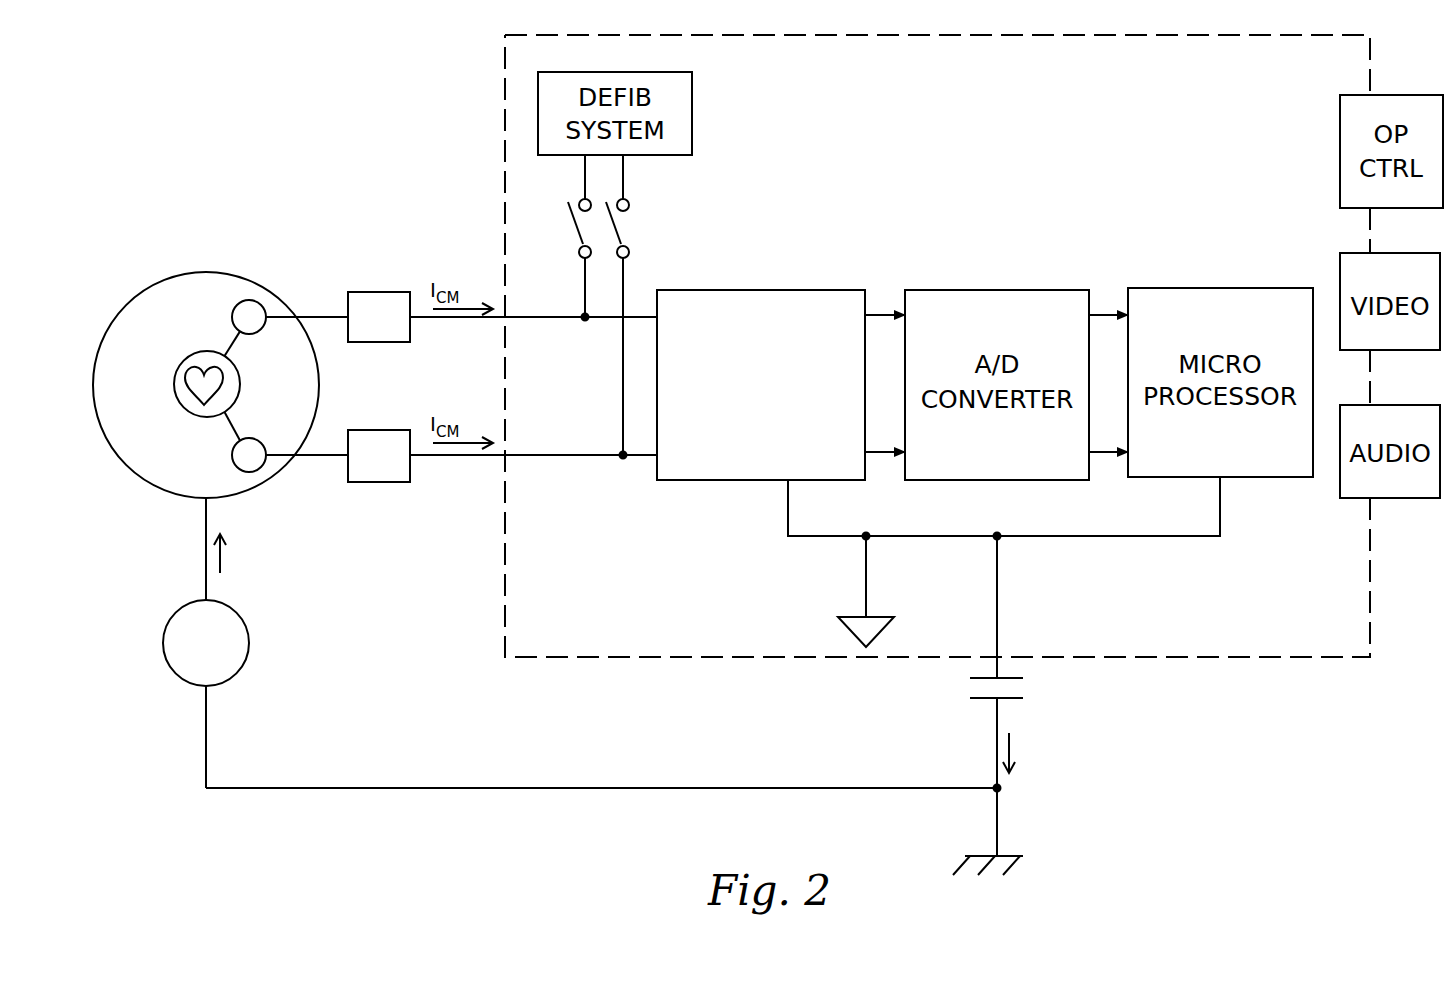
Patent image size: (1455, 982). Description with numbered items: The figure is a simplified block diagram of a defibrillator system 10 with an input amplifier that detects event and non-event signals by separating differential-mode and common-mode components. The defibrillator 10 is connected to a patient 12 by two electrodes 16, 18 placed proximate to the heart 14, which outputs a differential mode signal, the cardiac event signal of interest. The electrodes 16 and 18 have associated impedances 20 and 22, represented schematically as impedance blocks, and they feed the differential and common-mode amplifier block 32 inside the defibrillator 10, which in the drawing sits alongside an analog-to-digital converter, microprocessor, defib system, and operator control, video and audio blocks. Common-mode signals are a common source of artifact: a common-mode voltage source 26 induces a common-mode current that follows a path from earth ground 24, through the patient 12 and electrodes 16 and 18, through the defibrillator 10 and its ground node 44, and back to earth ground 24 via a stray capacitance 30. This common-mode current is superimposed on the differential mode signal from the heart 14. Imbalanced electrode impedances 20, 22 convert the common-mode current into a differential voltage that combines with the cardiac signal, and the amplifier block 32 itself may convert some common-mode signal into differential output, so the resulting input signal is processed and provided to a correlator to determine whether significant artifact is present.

The defibrillator system 10 is at (1249, 657).
The patient 12 is at (236, 279).
The heart 14 is at (175, 388).
The electrode 16 is at (232, 307).
The electrode 18 is at (235, 462).
The electrode impedance 20 is at (356, 292).
The electrode impedance 22 is at (357, 430).
The earth ground 24 is at (1020, 856).
The common-mode voltage source 26 is at (240, 622).
The stray capacitance 30 is at (1017, 698).
The differential and common-mode amplifier block 32 is at (761, 385).
The monitor ground node 44 is at (866, 538).